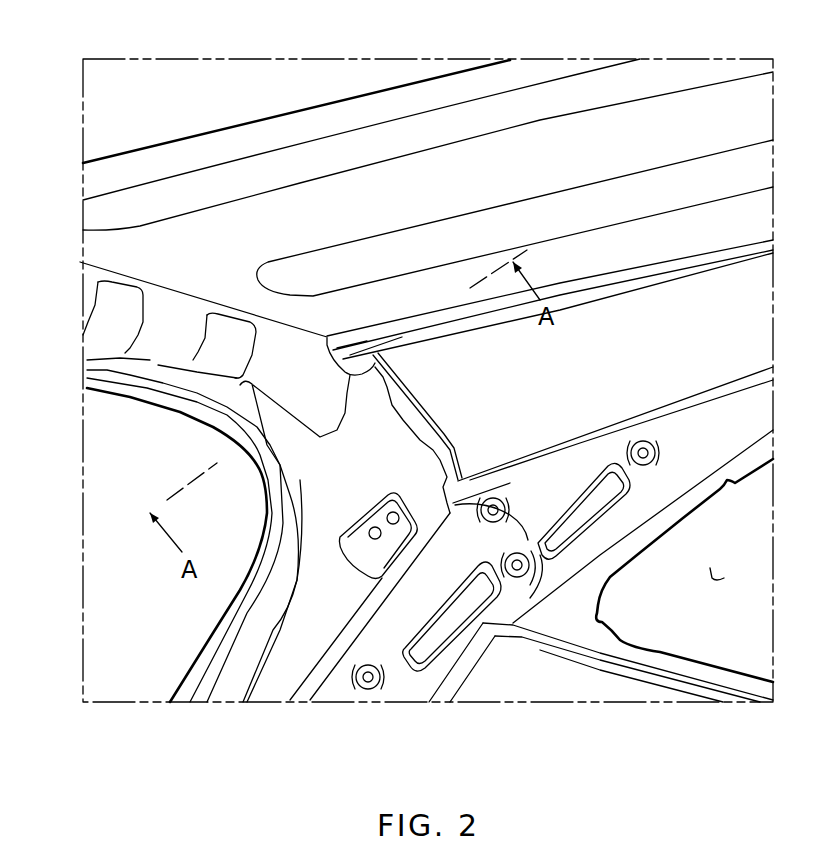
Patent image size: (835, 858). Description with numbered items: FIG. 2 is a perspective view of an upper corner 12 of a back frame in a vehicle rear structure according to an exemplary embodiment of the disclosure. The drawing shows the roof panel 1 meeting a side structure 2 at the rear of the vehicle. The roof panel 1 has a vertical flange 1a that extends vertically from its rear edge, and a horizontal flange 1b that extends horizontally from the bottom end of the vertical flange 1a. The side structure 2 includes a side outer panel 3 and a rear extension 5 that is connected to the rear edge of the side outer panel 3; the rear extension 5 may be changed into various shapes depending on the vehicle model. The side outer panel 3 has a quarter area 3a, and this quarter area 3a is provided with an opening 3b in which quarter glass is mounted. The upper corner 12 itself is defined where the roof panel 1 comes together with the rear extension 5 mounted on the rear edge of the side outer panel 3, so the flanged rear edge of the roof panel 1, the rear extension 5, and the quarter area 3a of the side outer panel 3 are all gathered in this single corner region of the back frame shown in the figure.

The roof panel 1 is at (370, 107).
The vertical flange 1a is at (185, 305).
The horizontal flange 1b is at (103, 345).
The upper corner 12 is at (380, 312).
The side structure 2 is at (779, 510).
The side outer panel 3 is at (729, 637).
The quarter area 3a is at (620, 686).
The opening 3b is at (711, 573).
The rear extension 5 is at (245, 662).